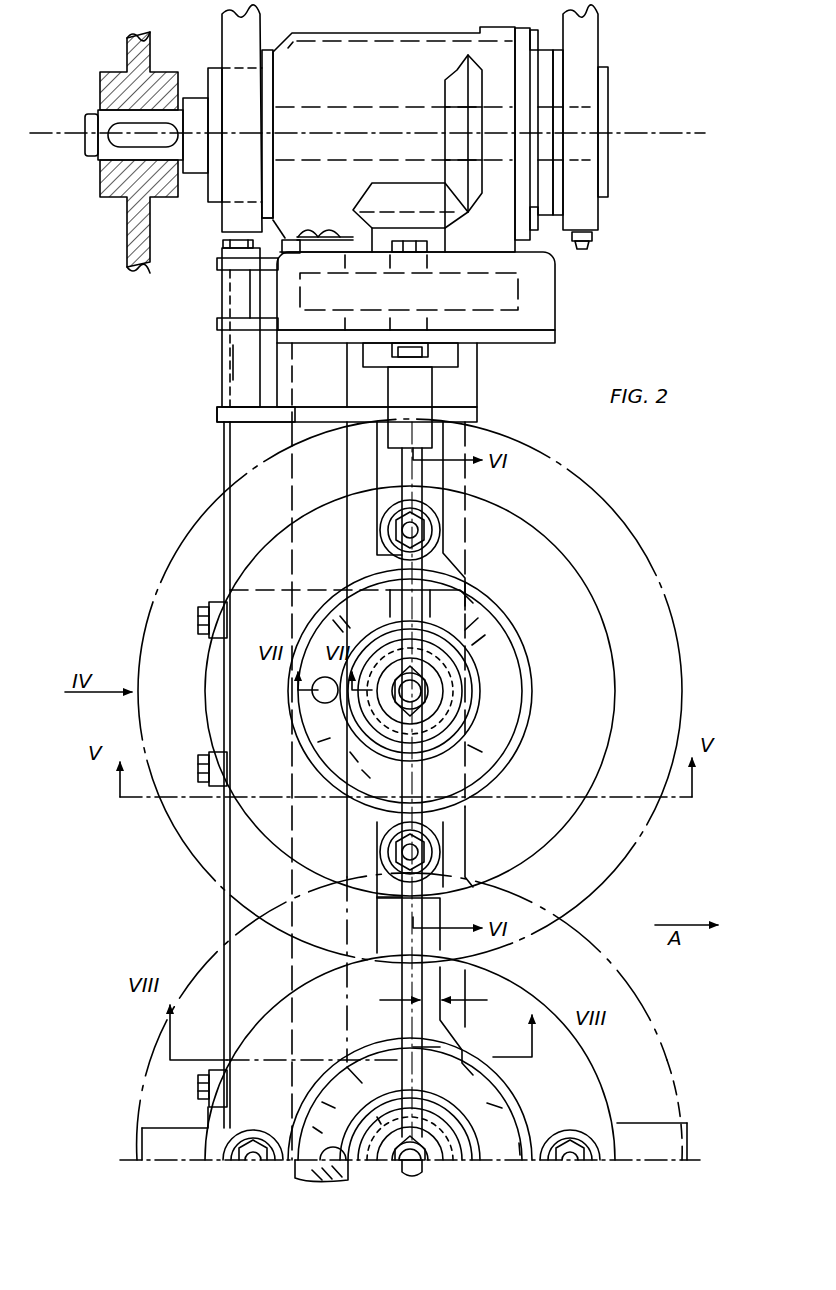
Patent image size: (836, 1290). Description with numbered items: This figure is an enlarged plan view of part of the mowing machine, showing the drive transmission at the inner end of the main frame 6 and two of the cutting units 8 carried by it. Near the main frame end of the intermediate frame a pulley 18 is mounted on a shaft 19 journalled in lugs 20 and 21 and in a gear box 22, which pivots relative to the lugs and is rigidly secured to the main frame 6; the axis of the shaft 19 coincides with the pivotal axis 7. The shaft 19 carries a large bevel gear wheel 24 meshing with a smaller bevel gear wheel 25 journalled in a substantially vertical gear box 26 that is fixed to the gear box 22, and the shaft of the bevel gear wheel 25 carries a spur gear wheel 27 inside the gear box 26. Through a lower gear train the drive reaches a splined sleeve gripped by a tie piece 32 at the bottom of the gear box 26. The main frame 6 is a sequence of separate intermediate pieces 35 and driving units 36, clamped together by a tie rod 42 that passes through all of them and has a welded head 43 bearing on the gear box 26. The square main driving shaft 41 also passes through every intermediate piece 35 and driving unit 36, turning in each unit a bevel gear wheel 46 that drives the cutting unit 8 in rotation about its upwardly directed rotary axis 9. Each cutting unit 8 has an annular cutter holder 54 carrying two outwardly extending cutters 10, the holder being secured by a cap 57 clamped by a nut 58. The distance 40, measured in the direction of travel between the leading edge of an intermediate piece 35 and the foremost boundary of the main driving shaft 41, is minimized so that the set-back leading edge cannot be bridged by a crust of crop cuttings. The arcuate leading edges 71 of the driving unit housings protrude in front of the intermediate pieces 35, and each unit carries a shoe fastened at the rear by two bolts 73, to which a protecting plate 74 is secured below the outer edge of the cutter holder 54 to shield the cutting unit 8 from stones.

The main frame 6 is at (222, 475).
The pivotal axis 7 is at (80, 134).
The cutting unit 8 is at (632, 528).
The rotary axis 9 is at (412, 692).
The cutter 10 is at (382, 460).
The pulley 18 is at (128, 240).
The shaft 19 is at (349, 108).
The lug 20 is at (228, 30).
The lug 21 is at (592, 38).
The gear box 22 is at (355, 30).
The bevel gear wheel 24 is at (450, 90).
The bevel gear wheel 25 is at (368, 192).
The gear box 26 is at (556, 286).
The gear wheel 27 is at (545, 312).
The tie piece 32 is at (460, 392).
The intermediate piece 35 is at (232, 548).
The driving unit 36 is at (212, 600).
The distance 40 is at (440, 999).
The main driving shaft 41 is at (402, 1080).
The tie rod 42 is at (292, 970).
The welded head 43 is at (315, 222).
The bevel gear wheel 46 is at (392, 633).
The cutter holder 54 is at (312, 750).
The cap 57 is at (440, 750).
The nut 58 is at (432, 685).
The leading edge 71 is at (522, 692).
The bolt 73 is at (200, 626).
The protecting plate 74 is at (545, 848).